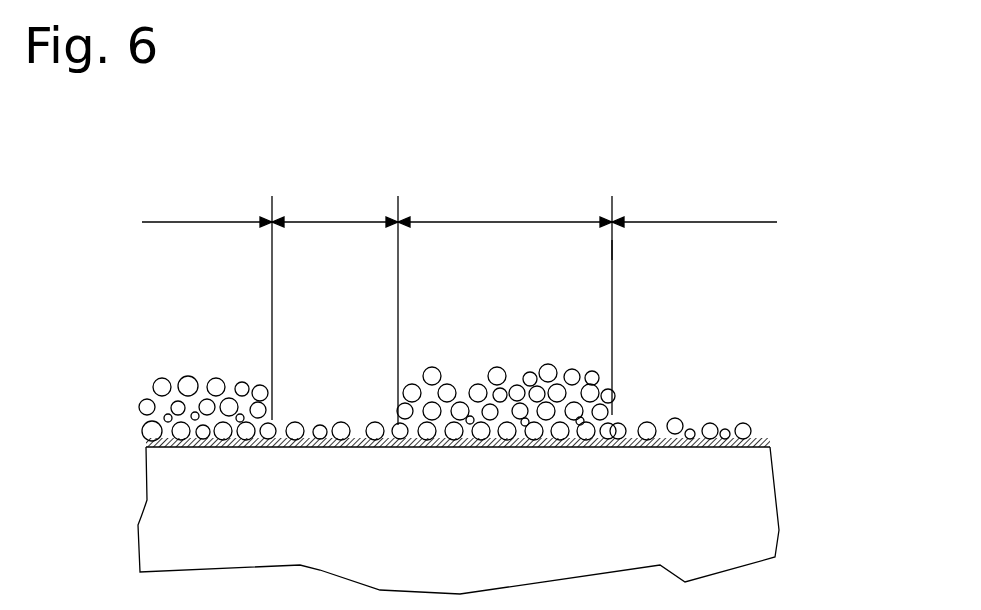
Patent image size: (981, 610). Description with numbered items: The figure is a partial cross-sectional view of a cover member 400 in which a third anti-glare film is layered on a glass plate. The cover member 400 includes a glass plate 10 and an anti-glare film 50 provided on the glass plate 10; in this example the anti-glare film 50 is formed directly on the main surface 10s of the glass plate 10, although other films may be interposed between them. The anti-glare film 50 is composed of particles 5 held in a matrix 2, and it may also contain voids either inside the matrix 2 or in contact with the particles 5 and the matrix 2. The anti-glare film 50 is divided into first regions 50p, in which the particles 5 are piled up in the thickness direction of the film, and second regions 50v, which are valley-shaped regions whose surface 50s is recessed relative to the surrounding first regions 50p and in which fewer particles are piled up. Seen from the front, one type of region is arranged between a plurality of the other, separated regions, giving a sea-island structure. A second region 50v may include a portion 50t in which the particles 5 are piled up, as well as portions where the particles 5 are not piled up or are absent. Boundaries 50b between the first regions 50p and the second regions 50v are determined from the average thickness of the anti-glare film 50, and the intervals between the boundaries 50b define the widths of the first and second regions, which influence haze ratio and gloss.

The cover member 400 is at (891, 190).
The anti-glare film 50 is at (140, 412).
The surface of anti-glare film 50s is at (155, 380).
The first region 50p is at (192, 373).
The second region 50v is at (312, 415).
The matrix 2 is at (358, 415).
The boundary 50b is at (612, 250).
The portion in which particles are piled up 50t is at (676, 416).
The particle 5 is at (746, 418).
The main surface of glass plate 10s is at (768, 454).
The glass plate 10 is at (748, 515).